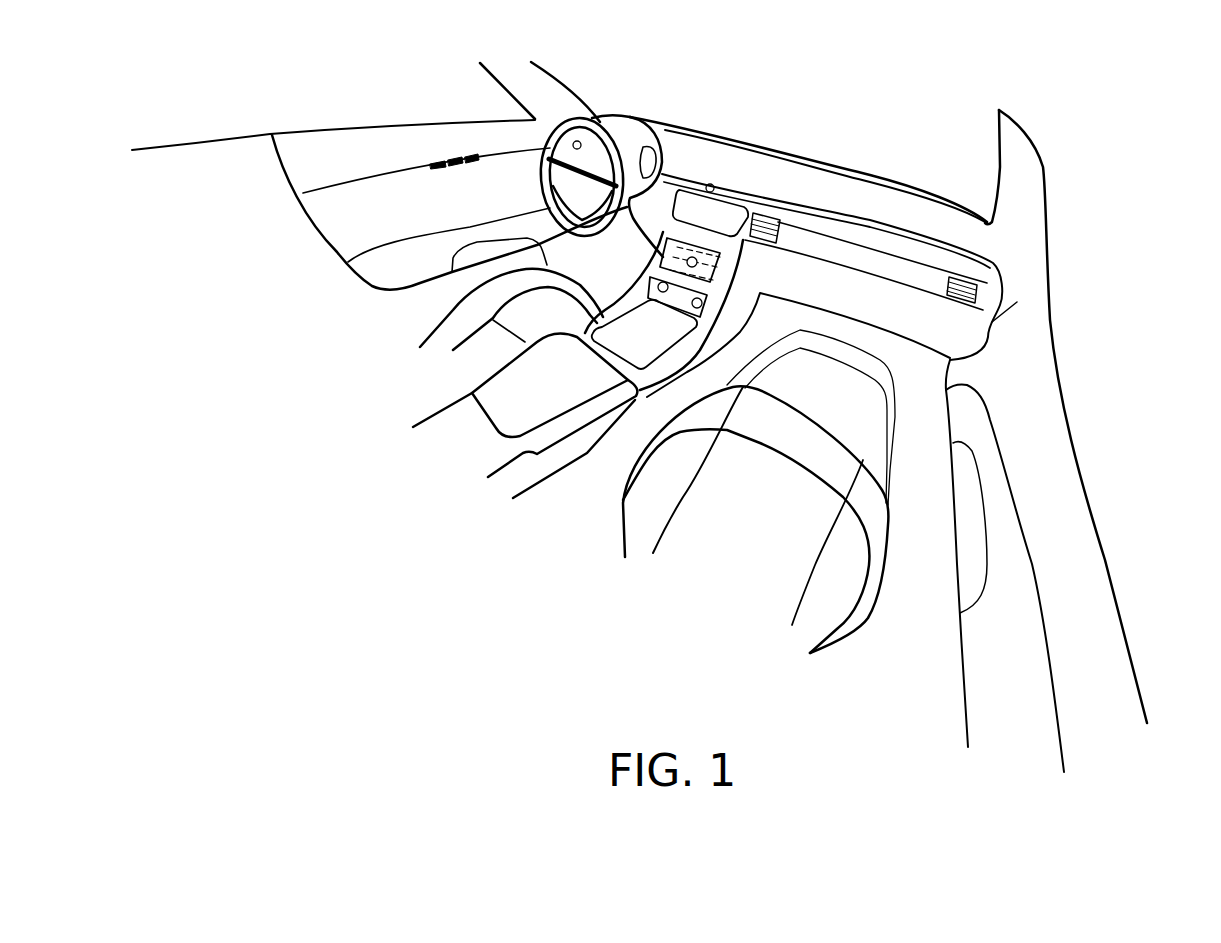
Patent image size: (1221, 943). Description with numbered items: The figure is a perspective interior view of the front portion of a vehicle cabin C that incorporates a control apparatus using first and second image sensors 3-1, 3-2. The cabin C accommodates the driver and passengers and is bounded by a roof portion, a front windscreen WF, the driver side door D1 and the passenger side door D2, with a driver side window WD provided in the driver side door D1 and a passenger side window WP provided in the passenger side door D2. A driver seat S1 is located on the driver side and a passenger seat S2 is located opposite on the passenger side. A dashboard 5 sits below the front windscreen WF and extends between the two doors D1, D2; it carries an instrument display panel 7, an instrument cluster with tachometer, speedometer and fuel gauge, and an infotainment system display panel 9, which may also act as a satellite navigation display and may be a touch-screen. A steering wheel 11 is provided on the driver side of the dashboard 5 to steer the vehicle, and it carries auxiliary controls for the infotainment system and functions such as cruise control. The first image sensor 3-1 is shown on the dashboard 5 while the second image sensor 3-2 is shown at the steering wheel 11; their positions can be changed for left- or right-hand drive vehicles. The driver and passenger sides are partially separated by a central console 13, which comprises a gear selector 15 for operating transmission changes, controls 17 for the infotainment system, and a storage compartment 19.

The first image sensor 3-1 is at (712, 184).
The second image sensor 3-2 is at (574, 144).
The dashboard 5 is at (890, 153).
The instrument display panel 7 is at (630, 133).
The infotainment system display panel 9 is at (735, 216).
The steering wheel 11 is at (583, 120).
The central console 13 is at (535, 392).
The gear selector 15 is at (687, 298).
The controls for the infotainment system 17 is at (716, 267).
The storage compartment 19 is at (650, 330).
The vehicle cabin C is at (1080, 268).
The driver side door D1 is at (386, 231).
The passenger side door D2 is at (1098, 621).
The driver seat S1 is at (462, 379).
The passenger seat S2 is at (752, 559).
The driver side window WD is at (333, 119).
The front windscreen WF is at (739, 52).
The passenger side window WP is at (1066, 416).